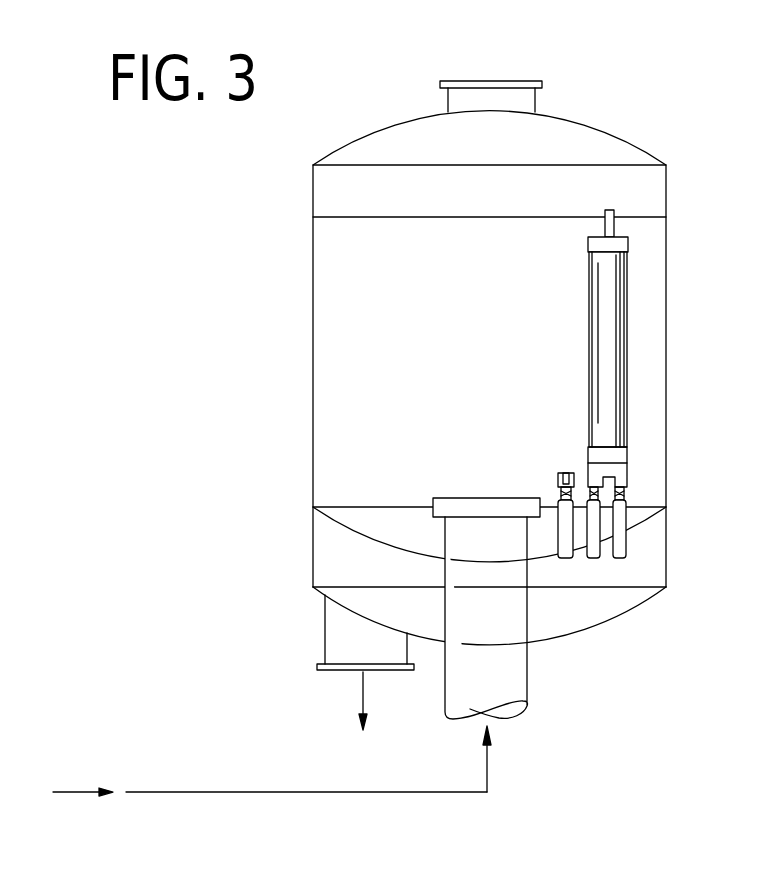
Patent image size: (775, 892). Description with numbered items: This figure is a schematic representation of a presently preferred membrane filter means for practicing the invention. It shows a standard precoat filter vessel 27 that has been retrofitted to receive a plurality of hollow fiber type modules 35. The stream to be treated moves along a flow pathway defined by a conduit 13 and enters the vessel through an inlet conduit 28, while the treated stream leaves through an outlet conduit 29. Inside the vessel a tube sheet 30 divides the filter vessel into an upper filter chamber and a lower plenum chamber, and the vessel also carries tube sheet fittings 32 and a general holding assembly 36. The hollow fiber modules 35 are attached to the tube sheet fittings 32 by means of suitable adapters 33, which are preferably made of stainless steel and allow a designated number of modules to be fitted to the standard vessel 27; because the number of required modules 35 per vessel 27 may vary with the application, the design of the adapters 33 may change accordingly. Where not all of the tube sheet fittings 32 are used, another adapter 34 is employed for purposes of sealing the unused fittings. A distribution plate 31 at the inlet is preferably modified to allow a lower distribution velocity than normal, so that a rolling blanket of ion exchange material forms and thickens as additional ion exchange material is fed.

The conduit 13 is at (268, 792).
The precoat filter vessel 27 is at (646, 148).
The inlet conduit 28 is at (529, 668).
The outlet conduit 29 is at (346, 636).
The tube sheet 30 is at (645, 521).
The distribution plate 31 is at (478, 498).
The tube sheet fittings 32 is at (627, 558).
The adapters 33 is at (622, 476).
The adapter 34 is at (566, 473).
The hollow fiber type modules 35 is at (615, 347).
The general holding assembly 36 is at (541, 217).